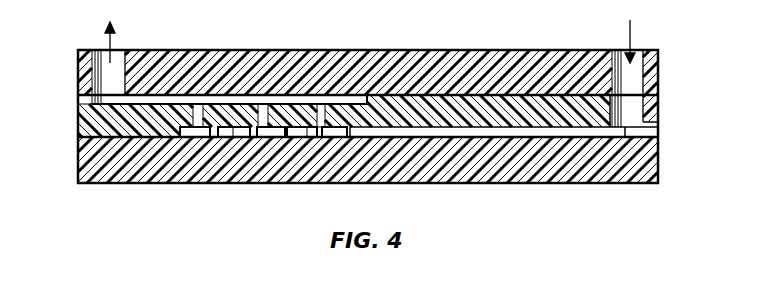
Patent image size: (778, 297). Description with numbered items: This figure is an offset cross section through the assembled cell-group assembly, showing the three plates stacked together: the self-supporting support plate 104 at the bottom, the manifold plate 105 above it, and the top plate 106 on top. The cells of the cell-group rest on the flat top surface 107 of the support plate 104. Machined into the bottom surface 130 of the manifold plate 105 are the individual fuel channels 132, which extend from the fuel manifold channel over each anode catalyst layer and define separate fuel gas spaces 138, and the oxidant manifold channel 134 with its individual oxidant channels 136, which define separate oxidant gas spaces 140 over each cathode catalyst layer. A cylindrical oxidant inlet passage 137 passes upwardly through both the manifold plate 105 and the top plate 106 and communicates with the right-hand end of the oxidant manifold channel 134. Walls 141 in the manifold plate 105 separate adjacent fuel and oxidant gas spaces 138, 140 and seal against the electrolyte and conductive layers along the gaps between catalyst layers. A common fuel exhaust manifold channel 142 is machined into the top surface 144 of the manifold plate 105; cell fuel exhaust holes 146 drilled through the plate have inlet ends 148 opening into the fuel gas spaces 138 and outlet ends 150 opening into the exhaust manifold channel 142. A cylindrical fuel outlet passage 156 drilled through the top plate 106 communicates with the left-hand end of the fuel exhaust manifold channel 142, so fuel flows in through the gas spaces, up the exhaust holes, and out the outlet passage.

The support plate 104 is at (650, 160).
The manifold plate 105 is at (645, 128).
The top plate 106 is at (660, 63).
The flat top surface 107 is at (103, 137).
The bottom surface 130 is at (95, 147).
The individual fuel channels 132 is at (276, 103).
The oxidant manifold channel 134 is at (575, 138).
The individual oxidant channels 136 is at (224, 118).
The oxidant inlet passage 137 is at (637, 101).
The fuel gas spaces 138 is at (197, 138).
The oxidant gas spaces 140 is at (233, 138).
The walls 141 is at (217, 138).
The fuel exhaust manifold channel 142 is at (366, 100).
The top surface 144 is at (599, 96).
The cell fuel exhaust holes 146 is at (328, 128).
The inlet ends 148 is at (347, 138).
The outlet ends 150 is at (339, 122).
The fuel outlet passage 156 is at (107, 60).